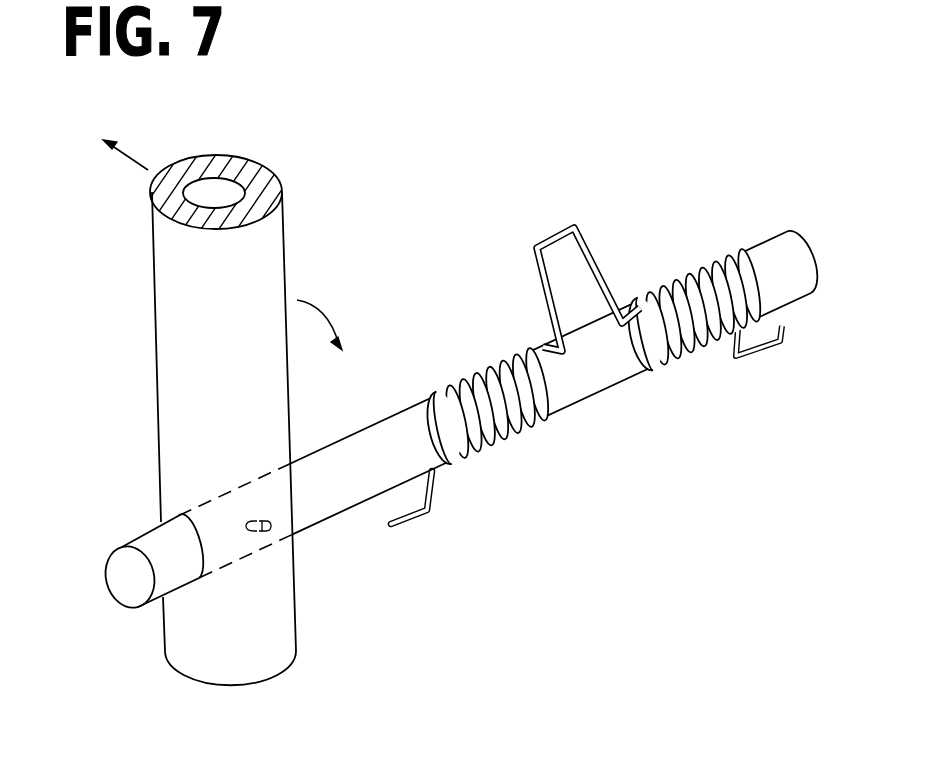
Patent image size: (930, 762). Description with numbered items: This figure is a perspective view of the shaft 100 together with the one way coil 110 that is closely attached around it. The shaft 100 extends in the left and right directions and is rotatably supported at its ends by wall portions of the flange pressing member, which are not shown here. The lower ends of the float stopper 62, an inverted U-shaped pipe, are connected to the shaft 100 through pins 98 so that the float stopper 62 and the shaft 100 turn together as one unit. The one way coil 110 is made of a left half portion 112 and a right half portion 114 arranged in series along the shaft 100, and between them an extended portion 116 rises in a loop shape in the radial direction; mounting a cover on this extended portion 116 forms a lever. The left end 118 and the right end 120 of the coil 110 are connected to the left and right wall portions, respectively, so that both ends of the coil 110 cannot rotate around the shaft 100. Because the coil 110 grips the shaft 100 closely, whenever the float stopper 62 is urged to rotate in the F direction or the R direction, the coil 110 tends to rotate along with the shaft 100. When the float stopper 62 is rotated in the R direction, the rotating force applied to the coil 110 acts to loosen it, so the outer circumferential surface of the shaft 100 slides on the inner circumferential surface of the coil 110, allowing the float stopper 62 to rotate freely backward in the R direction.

The float stopper 62 is at (272, 228).
The pin 98 is at (272, 526).
The shaft 100 is at (768, 255).
The one way coil 110 is at (464, 392).
The left half portion 112 is at (478, 457).
The right half portion 114 is at (690, 354).
The extended portion 116 is at (587, 241).
The left end 118 is at (410, 544).
The right end 120 is at (774, 359).
The R direction R is at (128, 157).
The F direction F is at (319, 311).